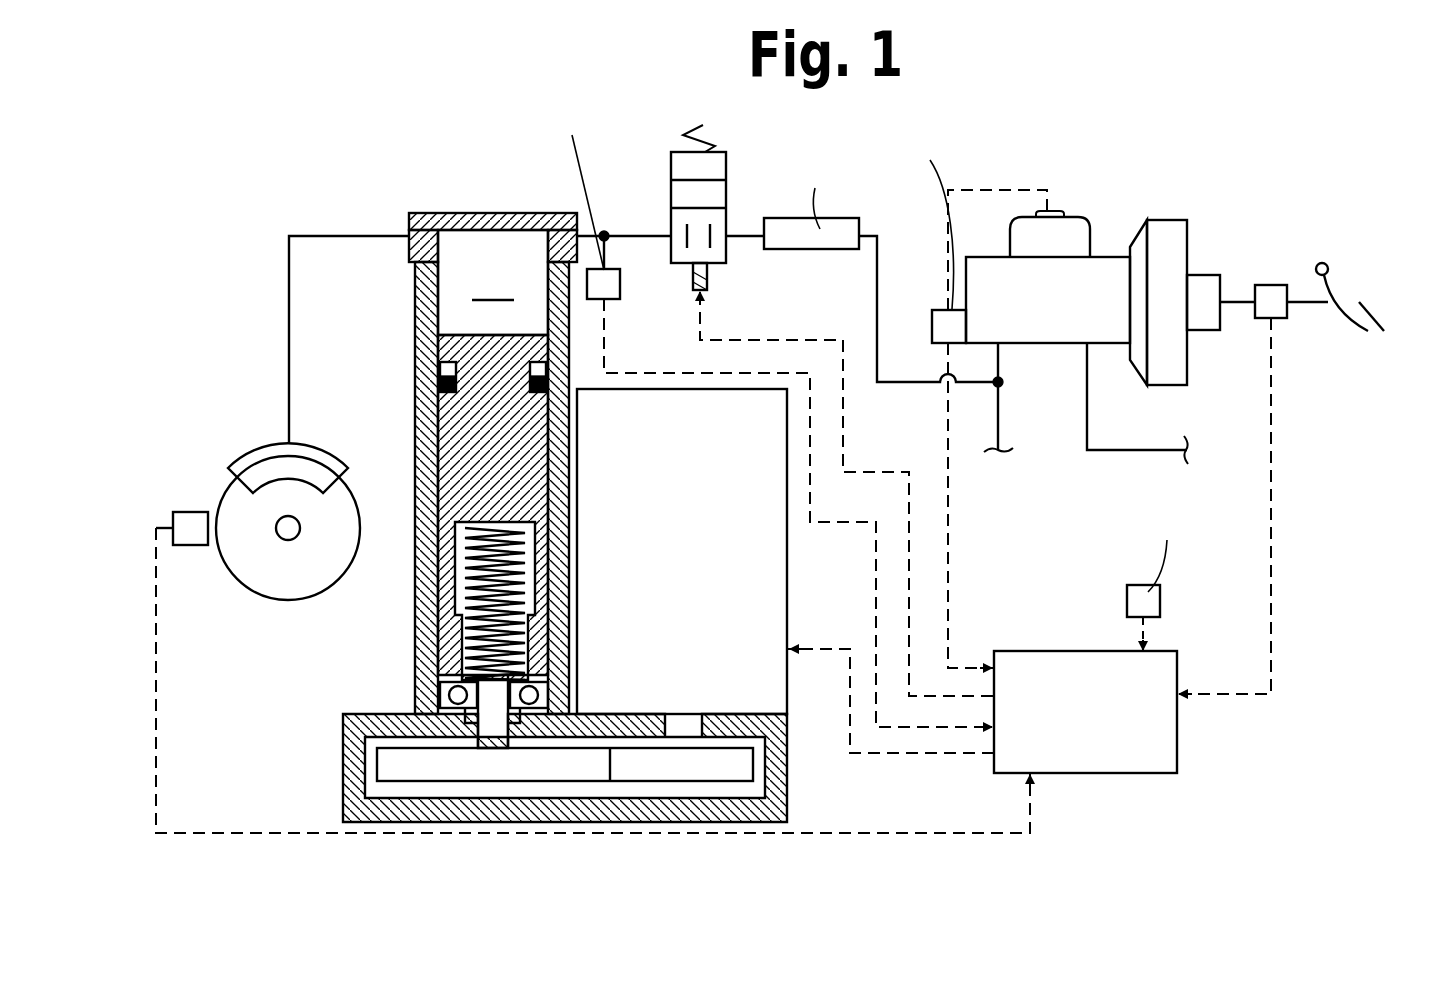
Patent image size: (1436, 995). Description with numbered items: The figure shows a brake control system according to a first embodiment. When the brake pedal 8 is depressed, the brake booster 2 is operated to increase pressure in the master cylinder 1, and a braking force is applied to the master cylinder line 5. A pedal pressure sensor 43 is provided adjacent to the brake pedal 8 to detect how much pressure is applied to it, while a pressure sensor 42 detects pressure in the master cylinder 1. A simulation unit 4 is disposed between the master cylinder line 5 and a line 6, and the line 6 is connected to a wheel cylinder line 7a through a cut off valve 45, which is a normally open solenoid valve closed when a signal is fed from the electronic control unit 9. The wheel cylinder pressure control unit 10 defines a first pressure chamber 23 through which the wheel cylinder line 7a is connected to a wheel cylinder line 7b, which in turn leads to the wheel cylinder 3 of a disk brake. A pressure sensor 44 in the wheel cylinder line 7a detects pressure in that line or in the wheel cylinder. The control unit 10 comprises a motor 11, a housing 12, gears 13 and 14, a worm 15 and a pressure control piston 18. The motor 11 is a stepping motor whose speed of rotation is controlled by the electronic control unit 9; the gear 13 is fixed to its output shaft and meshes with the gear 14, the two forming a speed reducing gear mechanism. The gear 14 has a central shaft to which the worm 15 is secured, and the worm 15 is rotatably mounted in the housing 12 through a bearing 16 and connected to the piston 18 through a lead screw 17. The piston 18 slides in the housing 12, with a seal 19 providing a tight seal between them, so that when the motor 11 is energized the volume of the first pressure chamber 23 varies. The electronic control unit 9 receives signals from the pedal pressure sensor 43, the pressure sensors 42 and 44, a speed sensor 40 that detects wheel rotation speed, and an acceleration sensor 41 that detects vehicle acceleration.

The master cylinder 1 is at (1110, 257).
The brake booster 2 is at (1168, 220).
The wheel cylinder 3 is at (255, 450).
The simulation unit 4 is at (832, 250).
The master cylinder line 5 is at (1003, 386).
The line 6 is at (750, 234).
The wheel cylinder line 7a is at (638, 234).
The wheel cylinder line 7b is at (343, 237).
The brake pedal 8 is at (1363, 331).
The electronic control unit 9 is at (1176, 672).
The wheel cylinder pressure control unit 10 is at (372, 220).
The motor 11 is at (788, 578).
The housing 12 is at (497, 212).
The gear 13 is at (766, 764).
The gear 14 is at (377, 762).
The worm 15 is at (483, 732).
The bearing 16 is at (440, 688).
The lead screw 17 is at (460, 630).
The pressure control piston 18 is at (442, 438).
The seal 19 is at (440, 388).
The first pressure chamber 23 is at (493, 282).
The speed sensor 40 is at (190, 546).
The acceleration sensor 41 is at (1160, 603).
The pressure sensor 42 is at (942, 309).
The pedal pressure sensor 43 is at (1276, 285).
The pressure sensor 44 is at (623, 291).
The cut off valve 45 is at (727, 254).